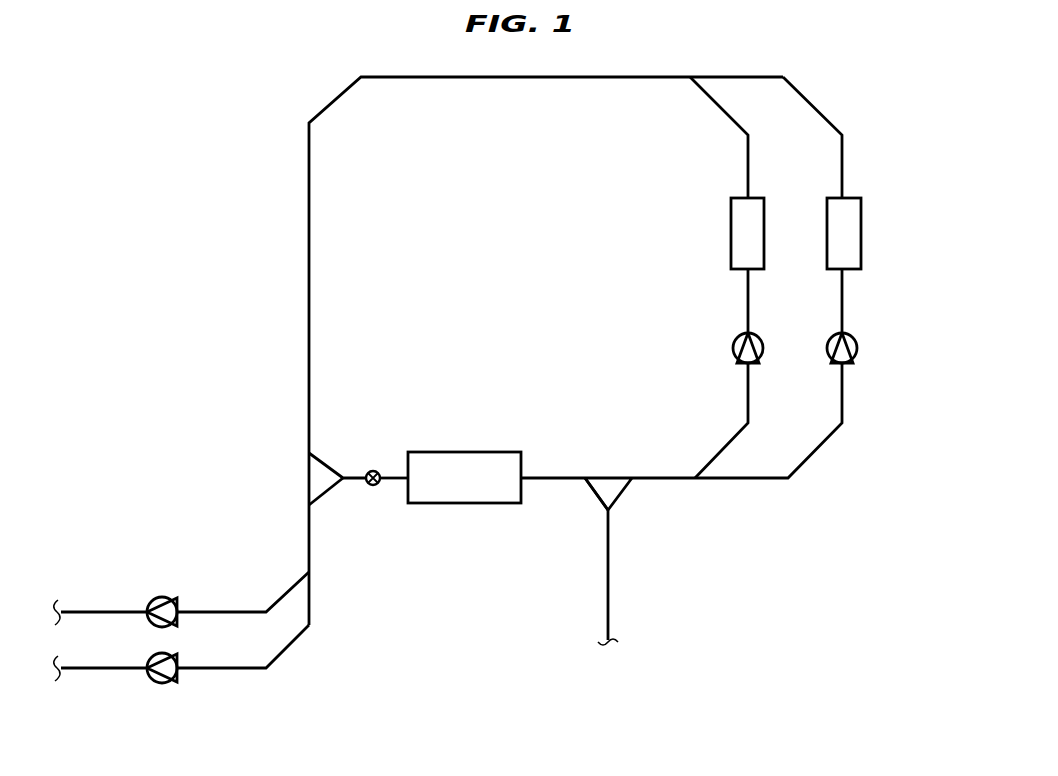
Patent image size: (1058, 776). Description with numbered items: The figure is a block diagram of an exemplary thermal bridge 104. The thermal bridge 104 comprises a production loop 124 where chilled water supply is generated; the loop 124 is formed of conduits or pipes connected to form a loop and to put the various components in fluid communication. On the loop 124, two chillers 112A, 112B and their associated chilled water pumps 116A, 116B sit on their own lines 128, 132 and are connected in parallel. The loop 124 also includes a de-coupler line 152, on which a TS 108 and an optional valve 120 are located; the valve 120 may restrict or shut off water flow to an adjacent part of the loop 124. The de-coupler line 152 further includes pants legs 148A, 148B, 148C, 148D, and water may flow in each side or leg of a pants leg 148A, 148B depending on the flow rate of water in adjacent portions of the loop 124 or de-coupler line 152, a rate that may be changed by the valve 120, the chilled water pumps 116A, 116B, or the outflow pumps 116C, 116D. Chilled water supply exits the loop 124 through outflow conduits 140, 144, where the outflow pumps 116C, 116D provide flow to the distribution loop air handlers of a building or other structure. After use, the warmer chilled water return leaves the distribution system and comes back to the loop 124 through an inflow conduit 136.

The thermal bridge 104 is at (192, 384).
The TS 108 is at (465, 452).
The chiller 112A is at (737, 197).
The chiller 112B is at (848, 197).
The chilled water pump 116A is at (739, 338).
The chilled water pump 116B is at (851, 338).
The outflow pump 116C is at (160, 598).
The outflow pump 116D is at (163, 683).
The valve 120 is at (376, 468).
The production loop 124 is at (333, 102).
The line 128 is at (725, 444).
The line 132 is at (817, 108).
The inflow conduit 136 is at (610, 583).
The outflow conduit 140 is at (287, 650).
The outflow conduit 144 is at (287, 590).
The pants leg 148A is at (323, 495).
The pants leg 148B is at (620, 497).
The pants leg 148C is at (325, 462).
The pants leg 148D is at (592, 490).
The de-coupler line 152 is at (558, 482).